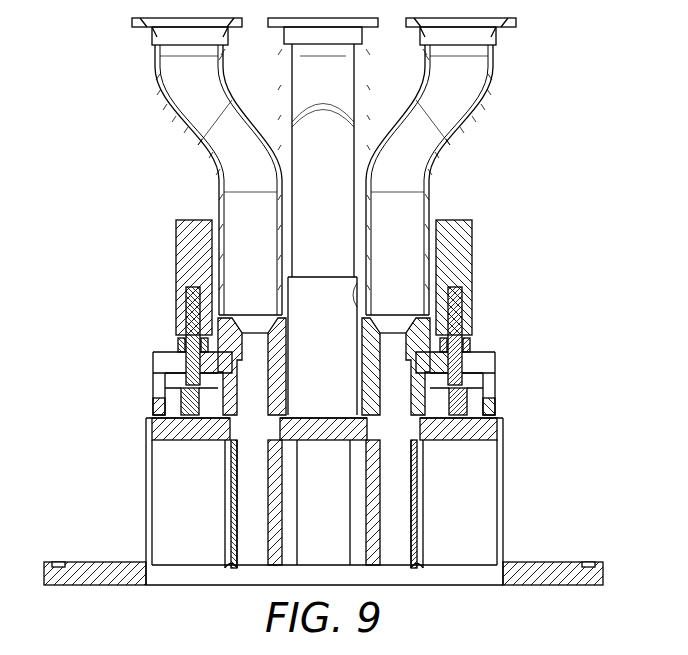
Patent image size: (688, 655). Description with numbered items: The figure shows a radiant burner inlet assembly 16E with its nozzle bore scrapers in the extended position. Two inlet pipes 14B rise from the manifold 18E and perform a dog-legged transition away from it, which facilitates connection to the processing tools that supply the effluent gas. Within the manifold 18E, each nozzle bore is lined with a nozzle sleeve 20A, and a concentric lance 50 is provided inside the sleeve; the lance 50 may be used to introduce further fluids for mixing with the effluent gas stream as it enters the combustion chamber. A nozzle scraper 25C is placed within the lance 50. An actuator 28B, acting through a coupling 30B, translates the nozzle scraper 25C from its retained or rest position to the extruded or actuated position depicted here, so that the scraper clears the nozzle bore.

The radiant burner inlet assembly 16E is at (526, 170).
The inlet pipe 14B is at (268, 251).
The lance 50 is at (350, 502).
The actuator 28B is at (176, 263).
The manifold 18E is at (152, 463).
The nozzle sleeve 20A is at (223, 518).
The coupling 30B is at (207, 426).
The nozzle scraper 25C is at (252, 552).